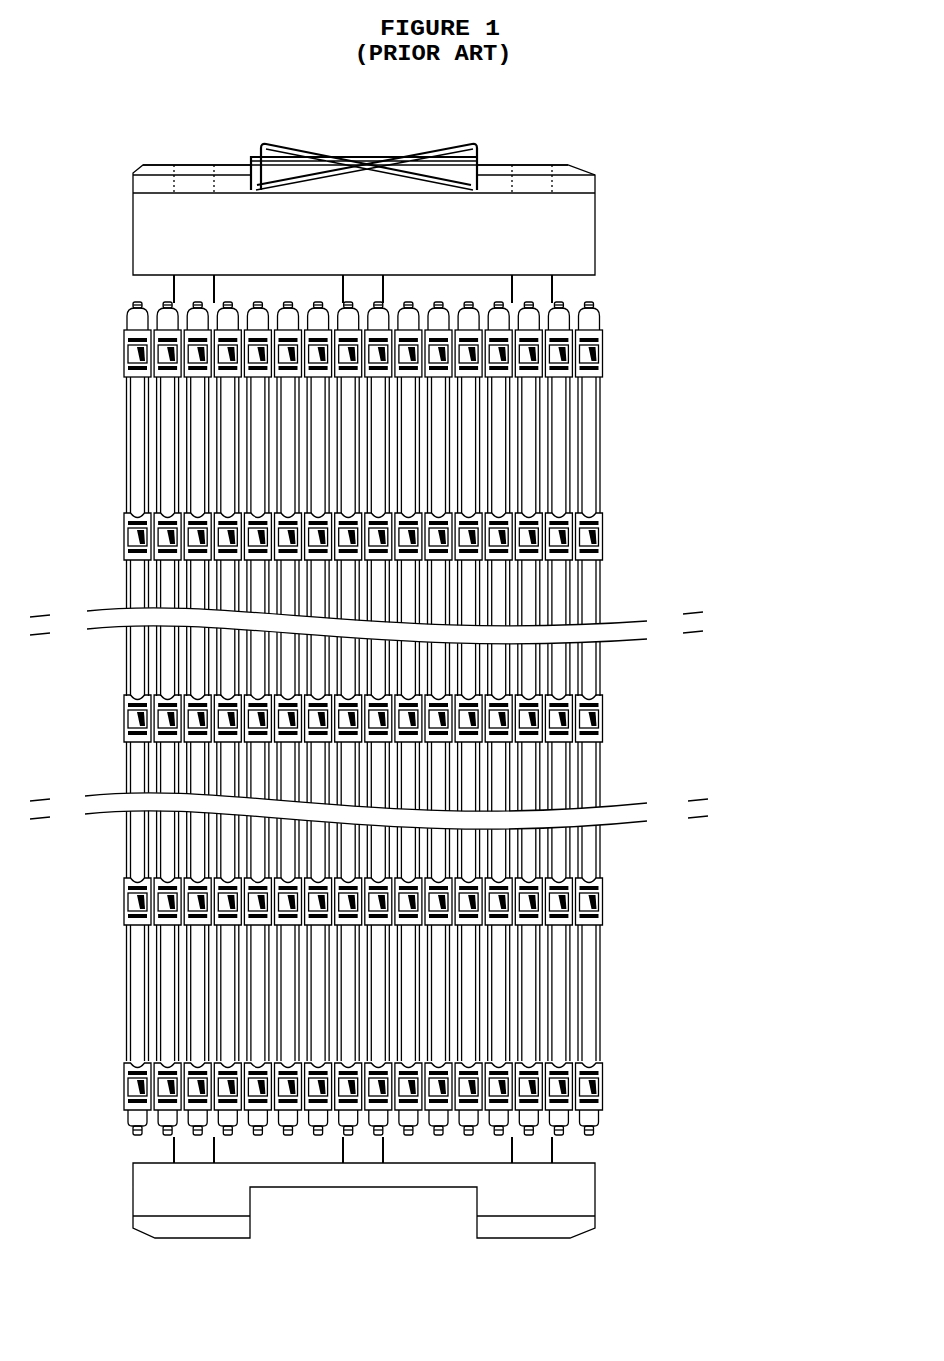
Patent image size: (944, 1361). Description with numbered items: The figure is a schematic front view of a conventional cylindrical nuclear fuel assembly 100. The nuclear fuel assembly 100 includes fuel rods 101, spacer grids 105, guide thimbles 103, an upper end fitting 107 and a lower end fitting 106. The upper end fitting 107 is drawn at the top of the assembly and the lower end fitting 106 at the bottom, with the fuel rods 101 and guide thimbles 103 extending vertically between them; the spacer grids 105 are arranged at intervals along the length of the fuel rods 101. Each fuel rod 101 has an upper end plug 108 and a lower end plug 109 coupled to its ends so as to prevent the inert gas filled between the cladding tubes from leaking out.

The nuclear fuel assembly 100 is at (682, 138).
The upper end fitting 107 is at (533, 226).
The guide thimbles 103 is at (537, 281).
The upper end plug 108 is at (590, 302).
The fuel rods 101 is at (597, 433).
The spacer grids 105 is at (604, 537).
The lower end plug 109 is at (595, 1133).
The lower end fitting 106 is at (572, 1197).